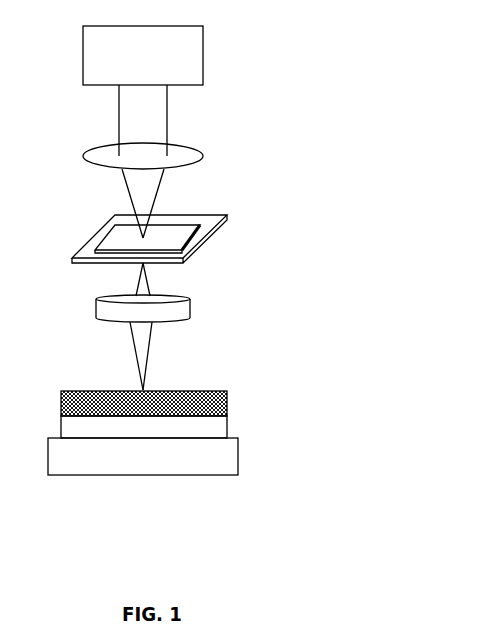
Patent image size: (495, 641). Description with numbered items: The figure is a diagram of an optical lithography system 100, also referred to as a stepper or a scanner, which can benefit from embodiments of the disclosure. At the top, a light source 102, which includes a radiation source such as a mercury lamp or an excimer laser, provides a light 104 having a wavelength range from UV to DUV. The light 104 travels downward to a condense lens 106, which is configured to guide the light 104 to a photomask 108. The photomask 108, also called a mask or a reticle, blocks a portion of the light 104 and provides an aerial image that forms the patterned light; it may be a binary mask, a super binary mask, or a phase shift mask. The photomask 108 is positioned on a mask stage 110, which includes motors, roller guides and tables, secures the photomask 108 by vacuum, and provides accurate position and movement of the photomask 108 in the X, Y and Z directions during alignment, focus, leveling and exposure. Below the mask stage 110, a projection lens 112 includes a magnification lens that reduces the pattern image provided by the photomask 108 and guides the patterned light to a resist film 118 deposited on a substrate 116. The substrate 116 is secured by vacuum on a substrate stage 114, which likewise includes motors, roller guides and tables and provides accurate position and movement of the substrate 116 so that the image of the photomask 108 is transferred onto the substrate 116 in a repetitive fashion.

The optical lithography system 100 is at (368, 109).
The light source 102 is at (203, 60).
The light 104 is at (167, 118).
The condense lens 106 is at (203, 156).
The photomask 108 is at (192, 223).
The mask stage 110 is at (193, 250).
The projection lens 112 is at (190, 307).
The substrate stage 114 is at (238, 462).
The substrate 116 is at (227, 427).
The resist film 118 is at (227, 403).